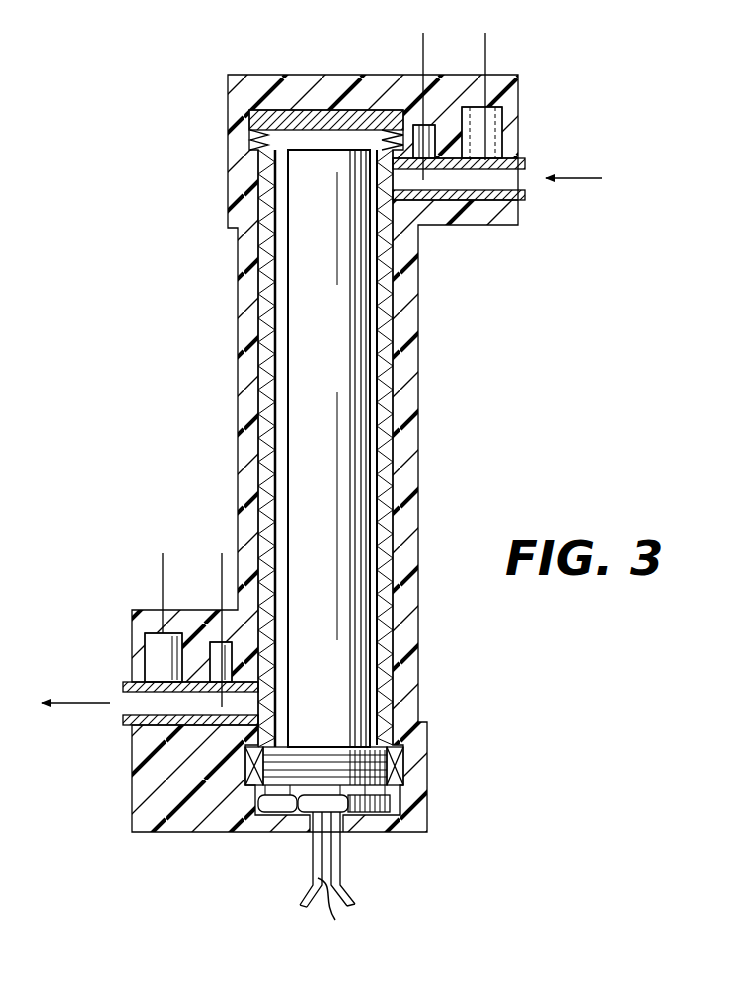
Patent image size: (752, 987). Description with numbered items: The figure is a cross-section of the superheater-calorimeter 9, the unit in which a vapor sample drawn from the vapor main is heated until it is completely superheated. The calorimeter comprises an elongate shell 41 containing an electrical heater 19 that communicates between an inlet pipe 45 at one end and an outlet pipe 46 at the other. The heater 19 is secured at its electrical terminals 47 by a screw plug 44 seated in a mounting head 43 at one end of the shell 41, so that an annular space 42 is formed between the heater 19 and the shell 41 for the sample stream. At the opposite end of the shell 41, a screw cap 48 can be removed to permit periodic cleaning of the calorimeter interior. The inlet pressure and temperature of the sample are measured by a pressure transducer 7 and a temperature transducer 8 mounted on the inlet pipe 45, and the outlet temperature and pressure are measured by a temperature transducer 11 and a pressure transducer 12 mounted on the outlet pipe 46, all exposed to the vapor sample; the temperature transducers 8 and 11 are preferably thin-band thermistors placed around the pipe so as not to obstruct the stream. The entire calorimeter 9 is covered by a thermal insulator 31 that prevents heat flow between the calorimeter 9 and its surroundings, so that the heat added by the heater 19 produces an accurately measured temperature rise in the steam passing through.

The pressure transducer 7 is at (480, 118).
The temperature transducer 8 is at (415, 124).
The superheater-calorimeter 9 is at (325, 453).
The temperature transducer 11 is at (210, 650).
The pressure transducer 12 is at (153, 650).
The electrical heater 19 is at (355, 353).
The thermal insulator 31 is at (237, 163).
The elongate shell 41 is at (383, 282).
The annular space 42 is at (370, 435).
The mounting head 43 is at (410, 753).
The screw plug 44 is at (272, 803).
The inlet pipe 45 is at (518, 194).
The outlet pipe 46 is at (125, 716).
The electrical terminals 47 is at (327, 882).
The screw cap 48 is at (262, 112).